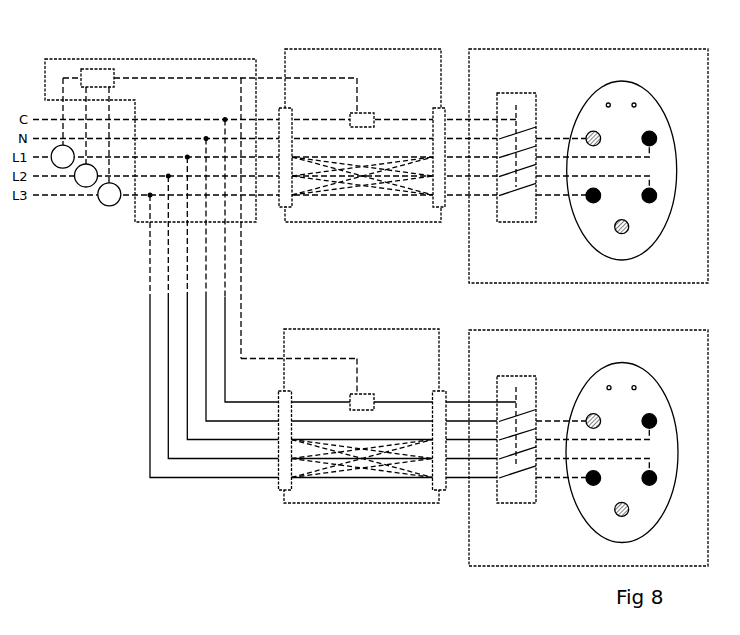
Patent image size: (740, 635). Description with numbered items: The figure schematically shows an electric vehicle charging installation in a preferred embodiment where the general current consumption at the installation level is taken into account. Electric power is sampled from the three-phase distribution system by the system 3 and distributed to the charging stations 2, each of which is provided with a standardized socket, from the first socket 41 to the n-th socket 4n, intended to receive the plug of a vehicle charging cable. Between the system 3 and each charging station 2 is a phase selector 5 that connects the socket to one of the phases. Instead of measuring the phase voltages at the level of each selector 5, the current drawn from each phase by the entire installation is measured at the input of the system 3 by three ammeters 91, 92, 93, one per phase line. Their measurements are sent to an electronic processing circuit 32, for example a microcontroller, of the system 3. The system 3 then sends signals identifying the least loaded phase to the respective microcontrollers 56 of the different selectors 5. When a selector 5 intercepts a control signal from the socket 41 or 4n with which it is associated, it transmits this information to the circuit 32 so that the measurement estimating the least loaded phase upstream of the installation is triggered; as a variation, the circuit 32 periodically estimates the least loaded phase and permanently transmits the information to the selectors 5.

The charging station 2 is at (678, 49).
The system 3 is at (188, 59).
The selector 5 is at (357, 49).
The electronic processing circuit 32 is at (114, 77).
The socket 41 is at (661, 98).
The socket 4n is at (658, 380).
The microcontroller 56 is at (365, 113).
The ammeter 91 is at (56, 166).
The ammeter 92 is at (78, 183).
The ammeter 93 is at (99, 202).